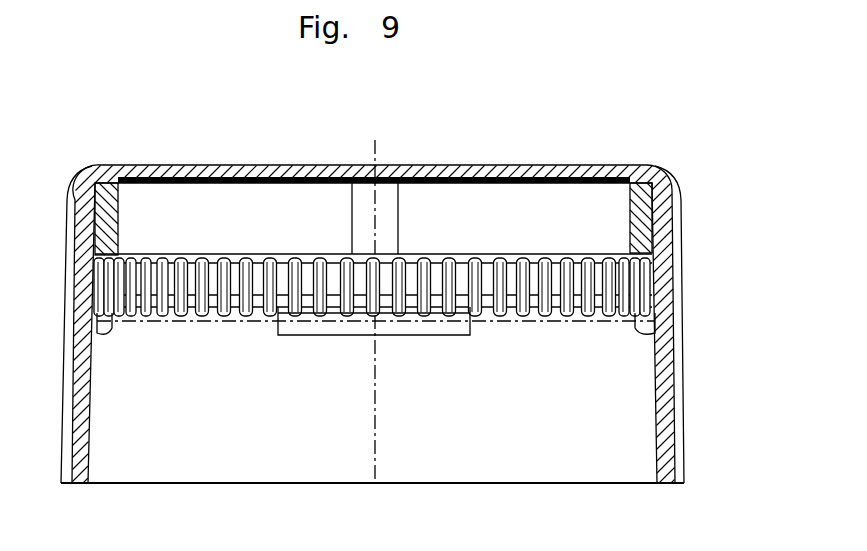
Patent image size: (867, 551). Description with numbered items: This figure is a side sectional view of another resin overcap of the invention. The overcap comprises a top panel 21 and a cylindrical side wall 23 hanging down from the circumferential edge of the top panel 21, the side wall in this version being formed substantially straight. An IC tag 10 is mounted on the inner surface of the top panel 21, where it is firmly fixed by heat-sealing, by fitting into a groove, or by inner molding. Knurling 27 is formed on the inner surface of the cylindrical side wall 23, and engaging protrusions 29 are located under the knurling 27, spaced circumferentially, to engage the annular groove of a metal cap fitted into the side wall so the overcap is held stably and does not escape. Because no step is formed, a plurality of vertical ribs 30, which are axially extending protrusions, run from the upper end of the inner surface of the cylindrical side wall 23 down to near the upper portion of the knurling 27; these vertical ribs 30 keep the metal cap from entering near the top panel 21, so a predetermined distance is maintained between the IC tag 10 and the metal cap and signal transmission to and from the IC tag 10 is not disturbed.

The IC tag 10 is at (501, 188).
The top panel 21 is at (294, 165).
The cylindrical side wall 23 is at (683, 240).
The knurling 27 is at (562, 305).
The engaging protrusions 29 is at (112, 332).
The vertical ribs 30 is at (118, 215).